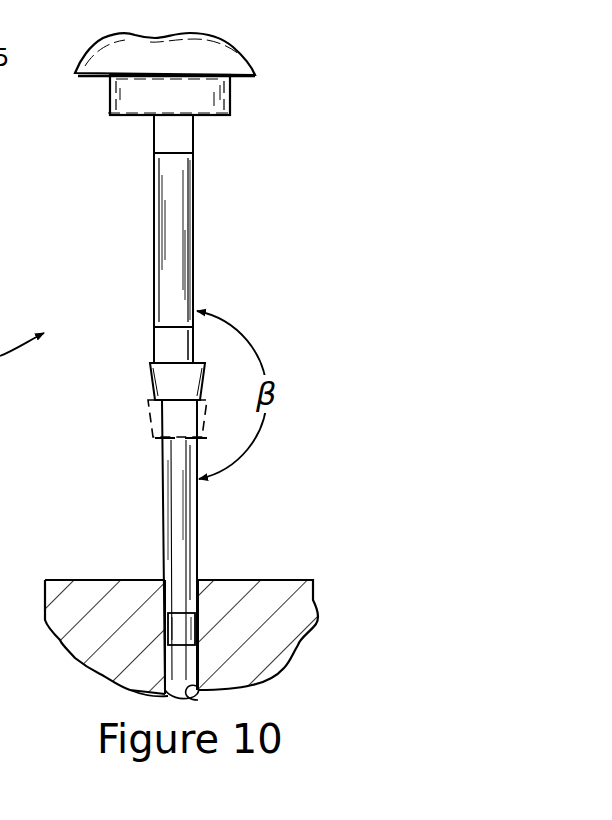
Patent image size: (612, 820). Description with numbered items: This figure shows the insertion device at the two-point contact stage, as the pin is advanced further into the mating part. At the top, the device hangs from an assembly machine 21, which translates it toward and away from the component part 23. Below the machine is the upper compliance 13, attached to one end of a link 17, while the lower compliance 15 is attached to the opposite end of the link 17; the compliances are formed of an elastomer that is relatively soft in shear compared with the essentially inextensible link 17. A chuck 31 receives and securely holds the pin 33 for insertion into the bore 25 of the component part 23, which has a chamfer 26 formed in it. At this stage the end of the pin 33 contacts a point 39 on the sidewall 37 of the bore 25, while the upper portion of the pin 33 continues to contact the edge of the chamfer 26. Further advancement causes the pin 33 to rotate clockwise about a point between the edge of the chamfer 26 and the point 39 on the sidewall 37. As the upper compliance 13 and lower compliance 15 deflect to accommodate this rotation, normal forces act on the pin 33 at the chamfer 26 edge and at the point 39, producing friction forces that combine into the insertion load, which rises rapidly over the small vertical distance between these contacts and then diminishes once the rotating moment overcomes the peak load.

The upper compliance 13 is at (193, 140).
The assembly machine 21 is at (232, 99).
The link 17 is at (154, 228).
The lower compliance 15 is at (154, 348).
The chuck 31 is at (150, 380).
The pin 33 is at (197, 522).
The component part 23 is at (313, 598).
The chamfer 26 is at (163, 583).
The point on sidewall 39 is at (198, 612).
The bore 25 is at (132, 690).
The sidewall 37 is at (190, 694).